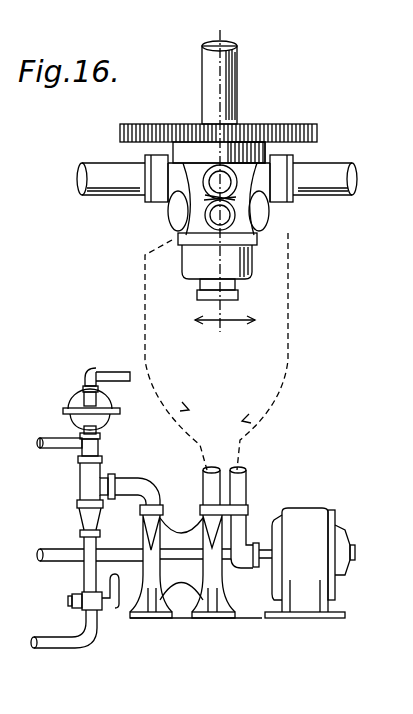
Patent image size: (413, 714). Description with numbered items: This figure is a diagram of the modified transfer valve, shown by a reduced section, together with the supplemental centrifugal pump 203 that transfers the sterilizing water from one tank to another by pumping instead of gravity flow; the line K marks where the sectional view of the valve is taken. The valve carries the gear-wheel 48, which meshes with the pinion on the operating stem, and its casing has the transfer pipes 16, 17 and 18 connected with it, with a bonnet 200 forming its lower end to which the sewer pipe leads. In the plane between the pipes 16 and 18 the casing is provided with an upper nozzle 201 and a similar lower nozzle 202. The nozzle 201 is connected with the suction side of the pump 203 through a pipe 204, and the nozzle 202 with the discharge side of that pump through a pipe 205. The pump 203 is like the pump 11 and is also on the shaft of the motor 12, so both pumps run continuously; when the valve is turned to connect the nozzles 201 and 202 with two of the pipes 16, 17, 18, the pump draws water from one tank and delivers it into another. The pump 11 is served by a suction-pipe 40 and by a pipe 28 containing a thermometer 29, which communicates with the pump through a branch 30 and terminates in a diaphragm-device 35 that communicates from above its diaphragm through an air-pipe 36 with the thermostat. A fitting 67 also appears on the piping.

The pipe 17 is at (240, 72).
The gear-wheel 48 is at (290, 125).
The pipe 18 is at (100, 172).
The pipe 16 is at (335, 172).
The bonnet 200 is at (253, 268).
The upper nozzle 201 is at (185, 196).
The lower nozzle 202 is at (263, 218).
The line K is at (225, 342).
The air-pipe 36 is at (113, 372).
The diaphragm-device 35 is at (82, 404).
The tee 67 is at (84, 478).
The branch 30 is at (128, 478).
The suction-pipe 40 is at (58, 549).
The thermometer 29 is at (106, 585).
The pipe 28 is at (48, 642).
The pump 11 is at (145, 550).
The centrifugal pump 203 is at (218, 546).
The pipe 205 is at (208, 490).
The pipe 204 is at (240, 490).
The motor 12 is at (312, 545).